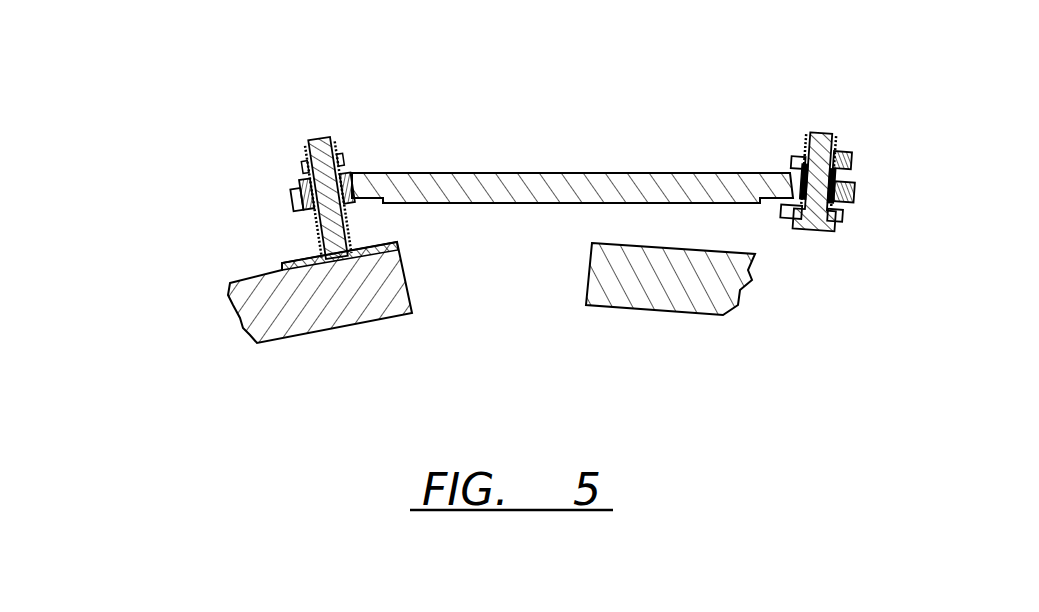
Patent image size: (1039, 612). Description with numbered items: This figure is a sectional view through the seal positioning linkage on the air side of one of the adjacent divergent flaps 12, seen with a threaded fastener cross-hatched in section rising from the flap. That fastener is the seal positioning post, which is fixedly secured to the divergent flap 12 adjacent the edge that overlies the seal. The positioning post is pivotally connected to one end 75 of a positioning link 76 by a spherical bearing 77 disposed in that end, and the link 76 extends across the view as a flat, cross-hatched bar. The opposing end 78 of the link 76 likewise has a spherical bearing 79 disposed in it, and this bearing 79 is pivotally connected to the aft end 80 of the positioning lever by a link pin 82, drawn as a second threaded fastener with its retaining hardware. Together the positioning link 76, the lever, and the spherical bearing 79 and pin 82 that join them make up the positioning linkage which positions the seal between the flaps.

The divergent flap 12 is at (322, 318).
The one end of positioning link 75 is at (290, 190).
The positioning link 76 is at (512, 197).
The spherical bearing 77 is at (288, 200).
The opposing end of positioning link 78 is at (857, 180).
The spherical bearing 79 is at (857, 193).
The aft end of positioning lever 80 is at (853, 163).
The link pin 82 is at (825, 133).